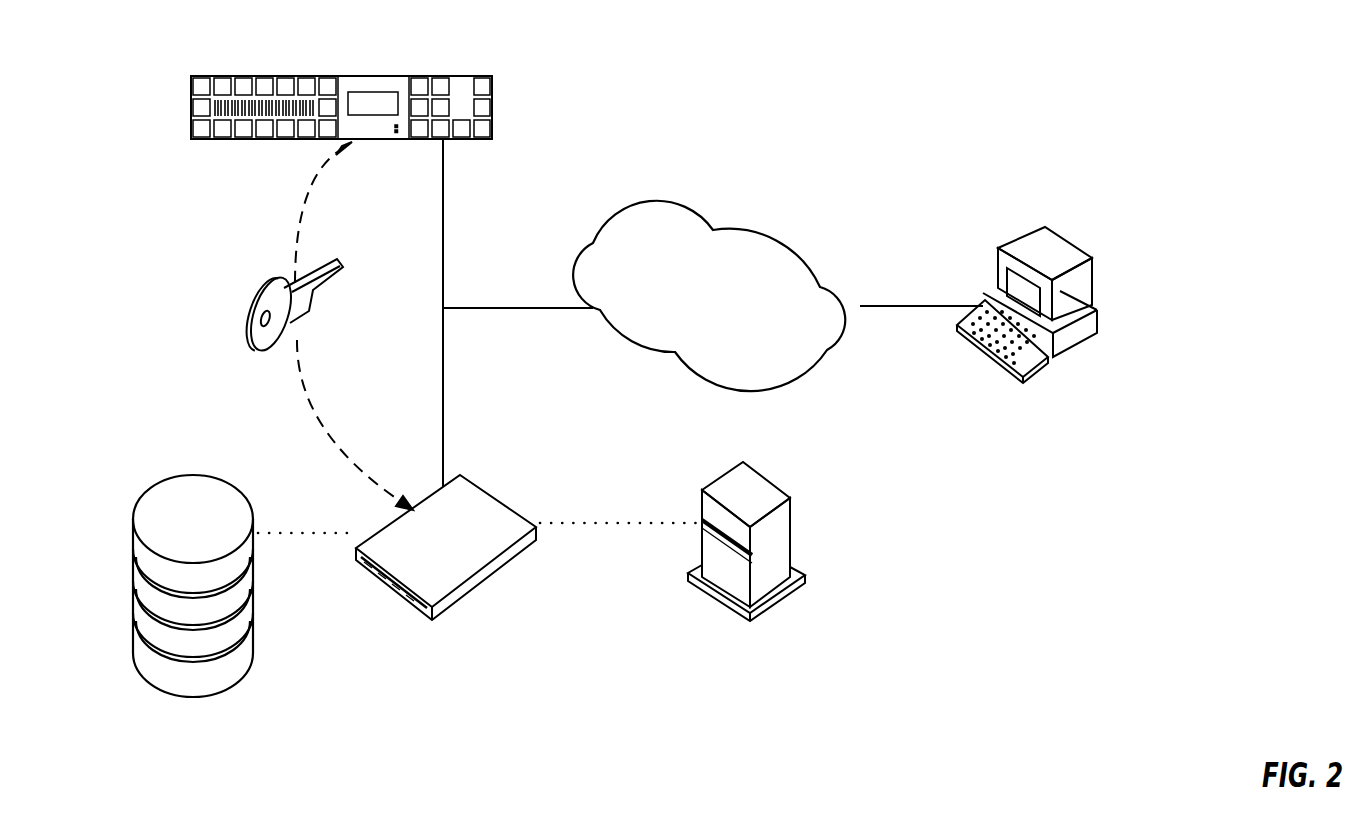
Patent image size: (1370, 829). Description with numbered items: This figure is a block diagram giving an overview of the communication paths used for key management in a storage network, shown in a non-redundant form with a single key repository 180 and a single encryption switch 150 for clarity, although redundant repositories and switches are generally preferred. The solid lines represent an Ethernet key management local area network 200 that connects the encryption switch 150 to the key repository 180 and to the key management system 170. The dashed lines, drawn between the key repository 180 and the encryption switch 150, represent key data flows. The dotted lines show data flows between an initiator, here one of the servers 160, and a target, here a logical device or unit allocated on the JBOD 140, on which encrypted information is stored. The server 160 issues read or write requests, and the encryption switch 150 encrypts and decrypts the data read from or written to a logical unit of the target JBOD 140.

The JBOD 140 is at (207, 475).
The encryption switch 150 is at (377, 573).
The server 160 is at (777, 482).
The key management system 170 is at (1068, 243).
The key repository 180 is at (427, 74).
The key management local area network 200 is at (802, 257).